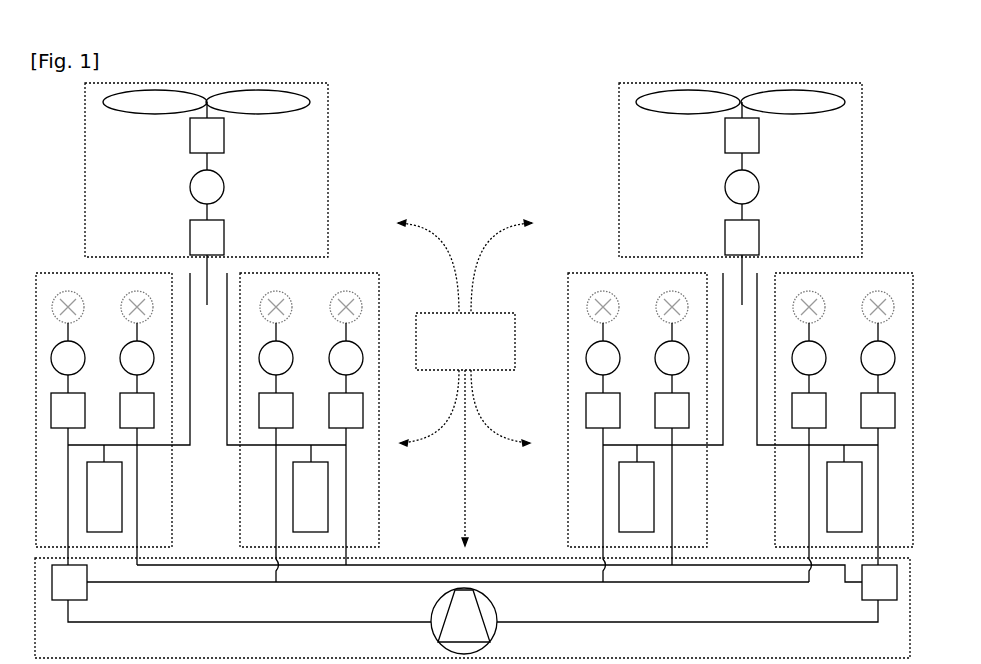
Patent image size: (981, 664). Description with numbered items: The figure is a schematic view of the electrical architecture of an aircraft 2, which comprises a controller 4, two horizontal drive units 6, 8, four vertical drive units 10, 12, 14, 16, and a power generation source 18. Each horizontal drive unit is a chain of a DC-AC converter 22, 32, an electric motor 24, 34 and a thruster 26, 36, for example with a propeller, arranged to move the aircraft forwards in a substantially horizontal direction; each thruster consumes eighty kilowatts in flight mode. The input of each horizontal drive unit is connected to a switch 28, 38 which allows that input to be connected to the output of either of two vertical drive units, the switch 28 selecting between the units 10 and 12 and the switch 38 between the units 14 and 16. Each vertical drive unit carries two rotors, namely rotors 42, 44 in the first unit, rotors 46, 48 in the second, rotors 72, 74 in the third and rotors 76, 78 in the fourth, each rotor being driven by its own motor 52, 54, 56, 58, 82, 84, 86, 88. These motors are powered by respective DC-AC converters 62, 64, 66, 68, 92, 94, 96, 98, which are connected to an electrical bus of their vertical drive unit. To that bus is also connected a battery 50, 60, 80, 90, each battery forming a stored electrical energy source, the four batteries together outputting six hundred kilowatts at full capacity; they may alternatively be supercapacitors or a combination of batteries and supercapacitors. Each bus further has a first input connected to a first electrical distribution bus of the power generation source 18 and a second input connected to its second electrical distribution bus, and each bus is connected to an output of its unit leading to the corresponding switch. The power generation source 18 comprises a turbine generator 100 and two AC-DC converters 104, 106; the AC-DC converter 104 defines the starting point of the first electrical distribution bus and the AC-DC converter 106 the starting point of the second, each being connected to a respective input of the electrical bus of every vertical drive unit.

The aircraft 2 is at (468, 184).
The controller 4 is at (465, 383).
The horizontal drive unit 6 is at (229, 170).
The horizontal drive unit 8 is at (716, 170).
The vertical drive unit 10 is at (131, 419).
The vertical drive unit 12 is at (285, 427).
The vertical drive unit 14 is at (664, 427).
The vertical drive unit 16 is at (819, 427).
The power generation source 18 is at (472, 608).
The DC-AC converter 22 is at (207, 237).
The electric motor 24 is at (207, 195).
The thruster 26 is at (207, 144).
The switch 28 is at (207, 290).
The DC-AC converter 32 is at (742, 237).
The electric motor 34 is at (742, 195).
The thruster 36 is at (742, 144).
The switch 38 is at (742, 290).
The rotor 42 is at (64, 308).
The rotor 44 is at (137, 308).
The rotor 46 is at (276, 308).
The rotor 48 is at (346, 308).
The battery 50 is at (104, 488).
The motor 52 is at (68, 367).
The motor 54 is at (137, 367).
The motor 56 is at (276, 367).
The motor 58 is at (346, 367).
The battery 60 is at (310, 488).
The DC-AC converter 62 is at (68, 410).
The DC-AC converter 64 is at (137, 410).
The DC-AC converter 66 is at (276, 410).
The DC-AC converter 68 is at (346, 410).
The rotor 72 is at (603, 308).
The rotor 74 is at (672, 308).
The rotor 76 is at (809, 308).
The rotor 78 is at (878, 308).
The battery 80 is at (636, 488).
The motor 82 is at (603, 367).
The motor 84 is at (672, 367).
The motor 86 is at (809, 367).
The motor 88 is at (878, 367).
The battery 90 is at (844, 488).
The DC-AC converter 92 is at (603, 410).
The DC-AC converter 94 is at (672, 410).
The DC-AC converter 96 is at (809, 410).
The DC-AC converter 98 is at (878, 410).
The turbine generator 100 is at (464, 621).
The AC-DC converter 104 is at (69, 582).
The AC-DC converter 106 is at (879, 582).